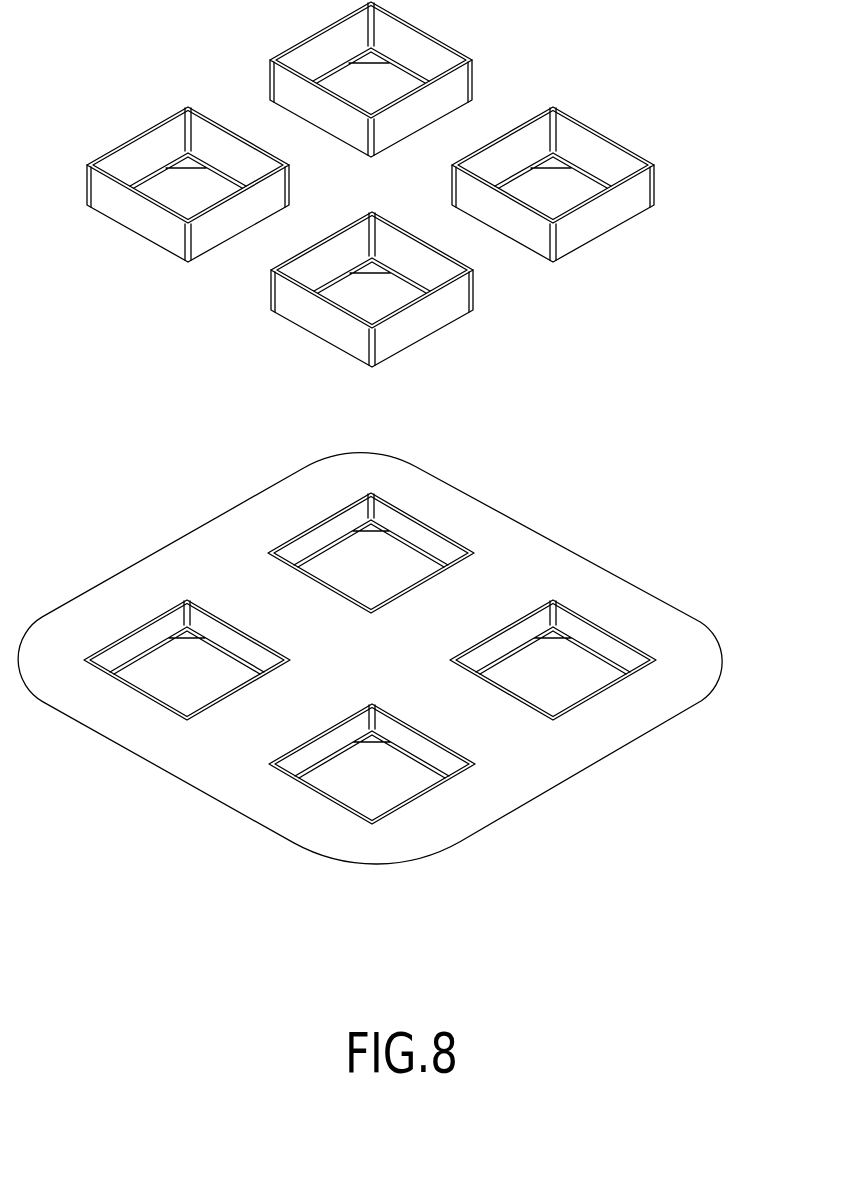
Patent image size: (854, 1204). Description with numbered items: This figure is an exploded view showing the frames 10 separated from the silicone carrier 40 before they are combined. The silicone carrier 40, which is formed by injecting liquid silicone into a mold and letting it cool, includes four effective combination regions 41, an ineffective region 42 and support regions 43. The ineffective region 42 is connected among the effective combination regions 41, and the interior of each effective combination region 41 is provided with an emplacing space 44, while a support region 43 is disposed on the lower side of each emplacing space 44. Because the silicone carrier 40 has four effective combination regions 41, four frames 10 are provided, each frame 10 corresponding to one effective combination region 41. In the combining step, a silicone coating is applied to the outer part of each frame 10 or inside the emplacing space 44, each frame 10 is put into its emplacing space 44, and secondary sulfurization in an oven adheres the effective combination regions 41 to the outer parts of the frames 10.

The frame 10 is at (457, 85).
The silicone carrier 40 is at (370, 650).
The effective combination region 41 is at (447, 540).
The ineffective region 42 is at (542, 555).
The support region 43 is at (582, 687).
The emplacing space 44 is at (395, 558).